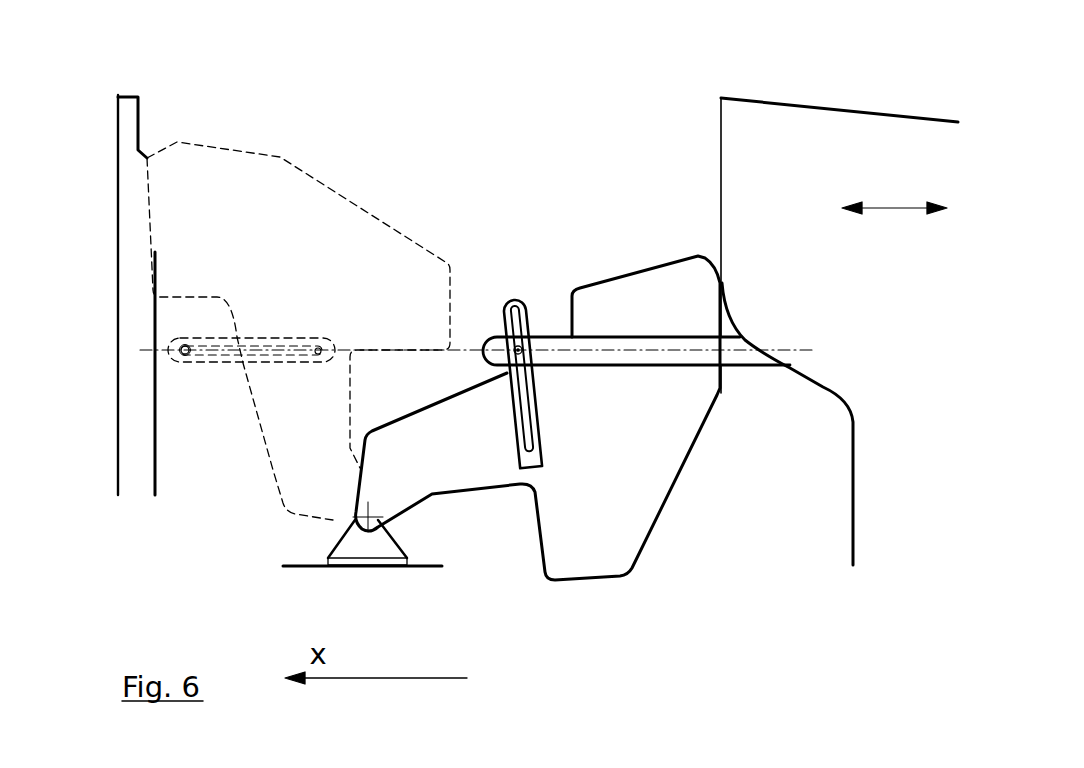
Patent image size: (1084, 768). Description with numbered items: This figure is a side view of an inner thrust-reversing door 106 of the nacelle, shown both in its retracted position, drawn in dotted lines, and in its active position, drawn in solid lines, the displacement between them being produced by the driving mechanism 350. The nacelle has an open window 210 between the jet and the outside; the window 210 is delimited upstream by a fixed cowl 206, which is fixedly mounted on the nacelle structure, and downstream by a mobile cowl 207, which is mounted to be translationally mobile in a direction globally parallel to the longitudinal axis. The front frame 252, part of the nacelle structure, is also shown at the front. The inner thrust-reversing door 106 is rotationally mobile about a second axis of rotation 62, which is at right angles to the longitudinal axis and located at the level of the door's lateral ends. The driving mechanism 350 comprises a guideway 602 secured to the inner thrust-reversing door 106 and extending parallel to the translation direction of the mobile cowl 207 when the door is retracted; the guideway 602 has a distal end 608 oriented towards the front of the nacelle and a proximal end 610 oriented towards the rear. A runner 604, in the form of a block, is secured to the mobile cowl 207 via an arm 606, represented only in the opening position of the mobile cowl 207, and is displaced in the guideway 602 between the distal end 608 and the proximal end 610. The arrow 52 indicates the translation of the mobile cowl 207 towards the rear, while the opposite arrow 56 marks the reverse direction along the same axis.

The window 210 is at (418, 98).
The front frame 252 is at (125, 108).
The fixed cowl 206 is at (99, 520).
The mobile cowl 207 is at (838, 143).
The inner thrust-reversing door 106 is at (380, 250).
The second axis of rotation 62 is at (350, 525).
The guideway 602 is at (273, 347).
The runner 604 is at (185, 348).
The arm 606 is at (733, 355).
The distal end 608 is at (185, 350).
The proximal end 610 is at (318, 352).
The driving mechanism 350 is at (788, 590).
The retraction direction 56 is at (884, 227).
The arrow 52 is at (932, 229).